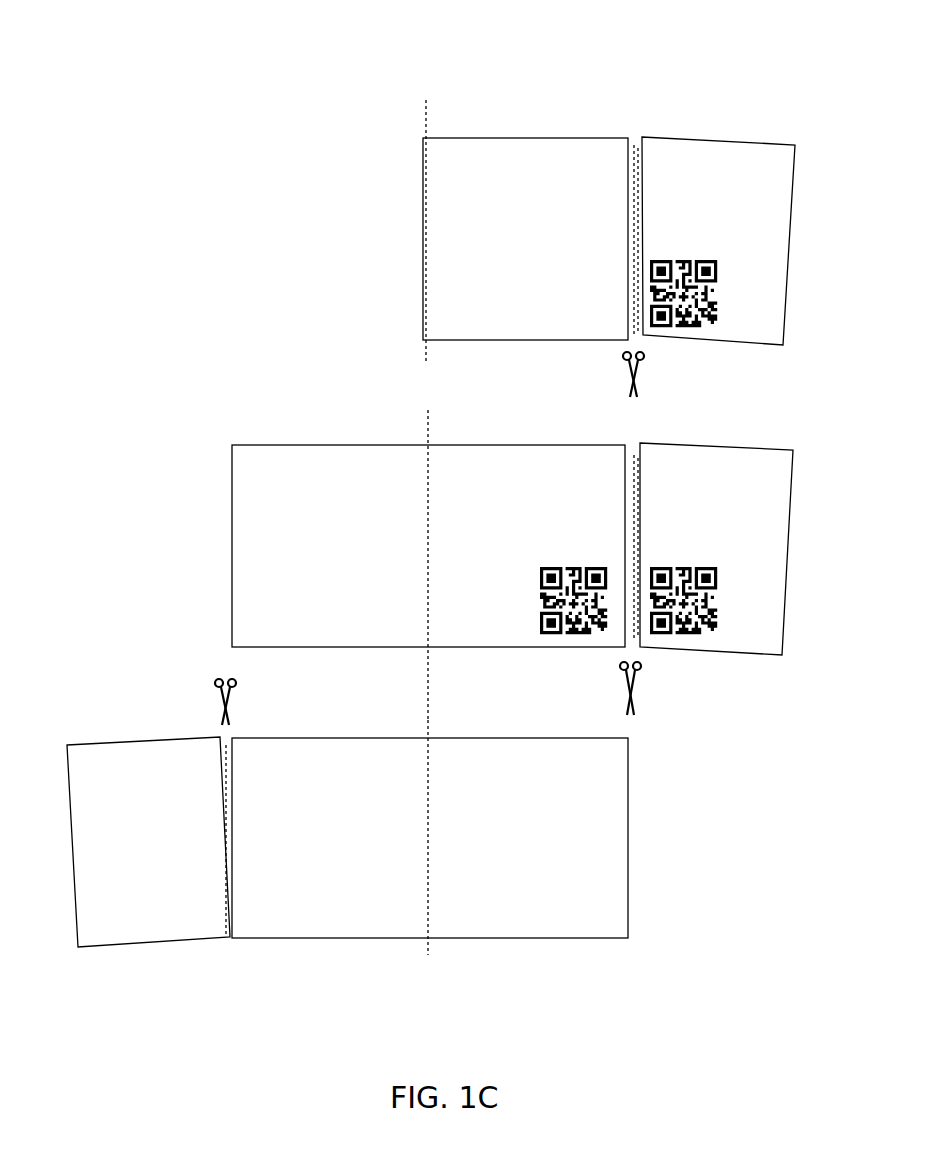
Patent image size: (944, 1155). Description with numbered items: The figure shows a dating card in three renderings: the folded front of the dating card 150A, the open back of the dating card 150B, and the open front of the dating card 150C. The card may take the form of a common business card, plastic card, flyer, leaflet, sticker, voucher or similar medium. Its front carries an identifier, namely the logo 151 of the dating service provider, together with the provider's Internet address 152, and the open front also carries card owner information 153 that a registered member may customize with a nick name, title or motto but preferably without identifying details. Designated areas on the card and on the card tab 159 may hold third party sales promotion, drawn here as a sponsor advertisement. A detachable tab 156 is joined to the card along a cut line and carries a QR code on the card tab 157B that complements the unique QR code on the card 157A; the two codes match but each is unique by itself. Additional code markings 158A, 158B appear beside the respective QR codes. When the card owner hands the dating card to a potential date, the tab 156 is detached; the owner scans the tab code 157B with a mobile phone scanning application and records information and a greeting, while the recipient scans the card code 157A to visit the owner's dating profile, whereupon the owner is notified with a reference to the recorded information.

The dating card front (folded) 150A is at (372, 133).
The dating card back (open) 150B is at (206, 418).
The dating card front (open) 150C is at (664, 952).
The logo 151 is at (485, 255).
The Internet address 152 is at (522, 938).
The card owner information 153 is at (303, 938).
The detachable tab 156 is at (160, 992).
The QR code on the card 157A is at (597, 637).
The QR code on the card tab 157B is at (682, 258).
The code XXX 158A is at (554, 548).
The code YYY 158B is at (743, 293).
The card tab 159 is at (353, 548).